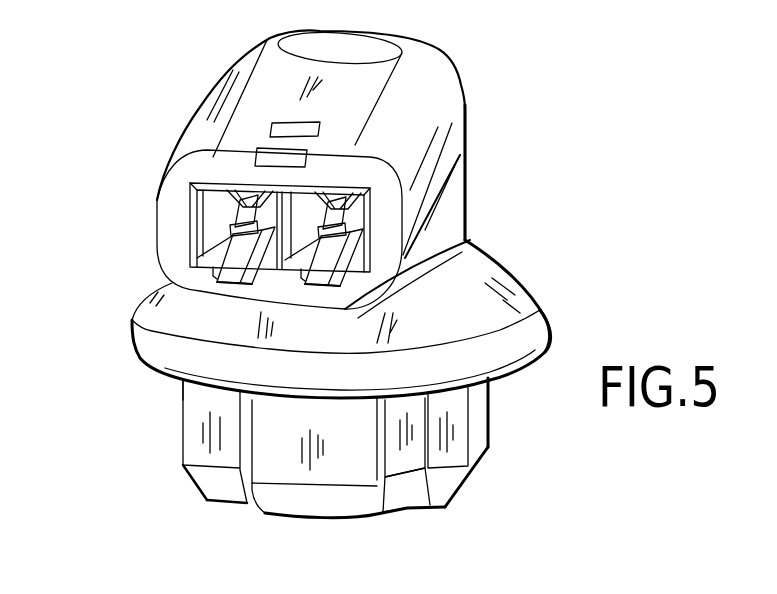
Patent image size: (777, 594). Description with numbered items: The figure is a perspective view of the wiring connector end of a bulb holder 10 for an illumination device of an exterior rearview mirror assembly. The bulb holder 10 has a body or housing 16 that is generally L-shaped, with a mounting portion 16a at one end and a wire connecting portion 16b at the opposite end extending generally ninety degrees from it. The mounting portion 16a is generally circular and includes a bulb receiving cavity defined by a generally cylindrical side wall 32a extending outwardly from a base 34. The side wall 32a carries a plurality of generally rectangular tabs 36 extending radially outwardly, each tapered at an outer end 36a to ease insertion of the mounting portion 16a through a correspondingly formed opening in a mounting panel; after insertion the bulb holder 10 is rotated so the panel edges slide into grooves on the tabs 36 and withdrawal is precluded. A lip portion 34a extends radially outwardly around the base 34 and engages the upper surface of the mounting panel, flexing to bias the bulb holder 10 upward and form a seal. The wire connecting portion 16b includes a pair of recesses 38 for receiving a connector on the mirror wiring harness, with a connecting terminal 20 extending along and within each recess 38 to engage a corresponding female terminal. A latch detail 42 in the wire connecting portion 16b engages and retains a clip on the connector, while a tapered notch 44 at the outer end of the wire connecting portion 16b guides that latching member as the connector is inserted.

The bulb holder 10 is at (102, 163).
The housing 16 is at (447, 57).
The mounting portion 16a is at (152, 410).
The wire connecting portion 16b is at (402, 148).
The wiring terminals 20 is at (365, 219).
The cylindrical side wall 32a is at (408, 460).
The base 34 is at (470, 241).
The lip portion 34a is at (535, 333).
The tabs 36 is at (187, 440).
The outer end 36a is at (200, 492).
The recesses 38 is at (305, 190).
The latch detail 42 is at (303, 128).
The tapered notch 44 is at (277, 157).